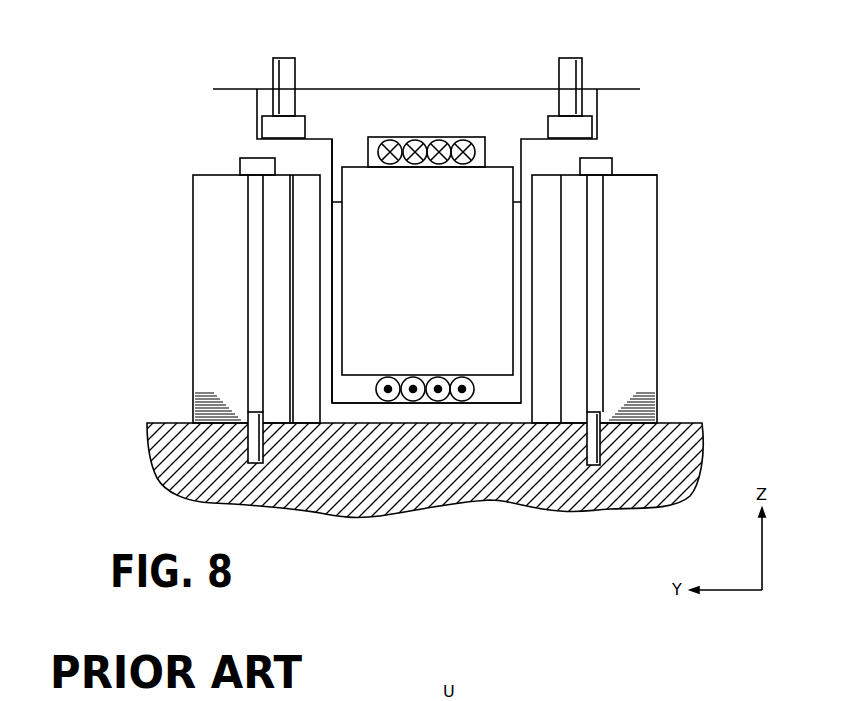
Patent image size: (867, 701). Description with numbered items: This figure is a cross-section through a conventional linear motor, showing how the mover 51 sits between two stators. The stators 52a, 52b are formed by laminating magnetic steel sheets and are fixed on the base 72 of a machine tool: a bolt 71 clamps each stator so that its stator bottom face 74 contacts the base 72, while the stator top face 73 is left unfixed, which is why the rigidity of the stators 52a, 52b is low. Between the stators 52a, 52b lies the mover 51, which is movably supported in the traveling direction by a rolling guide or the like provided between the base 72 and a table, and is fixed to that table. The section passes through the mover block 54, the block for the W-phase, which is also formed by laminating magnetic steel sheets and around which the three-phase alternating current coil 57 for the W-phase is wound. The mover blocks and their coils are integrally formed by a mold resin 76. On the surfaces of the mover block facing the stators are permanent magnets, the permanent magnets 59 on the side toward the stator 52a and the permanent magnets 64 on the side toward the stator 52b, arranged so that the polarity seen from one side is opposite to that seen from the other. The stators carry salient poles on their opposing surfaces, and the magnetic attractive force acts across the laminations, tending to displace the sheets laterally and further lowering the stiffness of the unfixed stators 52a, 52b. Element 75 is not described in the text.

The mover 51 is at (362, 407).
The stator 52a is at (630, 287).
The stator 52b is at (223, 300).
The mover block 54 is at (480, 250).
The three-phase alternating current coil 57 is at (428, 153).
The permanent magnet 59 is at (517, 333).
The permanent magnet 64 is at (335, 338).
The bolt 71 is at (613, 166).
The base 72 is at (678, 425).
The stator top face 73 is at (645, 169).
The stator bottom face 74 is at (543, 412).
The top plate 75 is at (363, 112).
The mold resin 76 is at (503, 393).